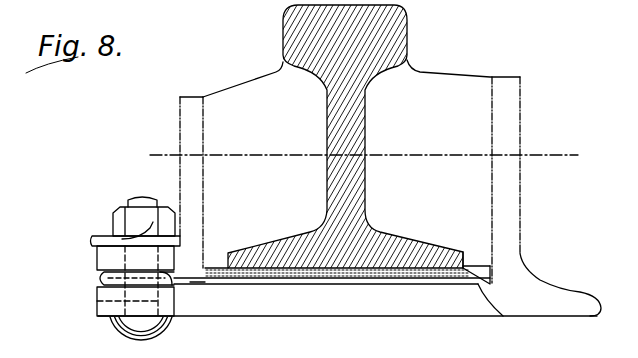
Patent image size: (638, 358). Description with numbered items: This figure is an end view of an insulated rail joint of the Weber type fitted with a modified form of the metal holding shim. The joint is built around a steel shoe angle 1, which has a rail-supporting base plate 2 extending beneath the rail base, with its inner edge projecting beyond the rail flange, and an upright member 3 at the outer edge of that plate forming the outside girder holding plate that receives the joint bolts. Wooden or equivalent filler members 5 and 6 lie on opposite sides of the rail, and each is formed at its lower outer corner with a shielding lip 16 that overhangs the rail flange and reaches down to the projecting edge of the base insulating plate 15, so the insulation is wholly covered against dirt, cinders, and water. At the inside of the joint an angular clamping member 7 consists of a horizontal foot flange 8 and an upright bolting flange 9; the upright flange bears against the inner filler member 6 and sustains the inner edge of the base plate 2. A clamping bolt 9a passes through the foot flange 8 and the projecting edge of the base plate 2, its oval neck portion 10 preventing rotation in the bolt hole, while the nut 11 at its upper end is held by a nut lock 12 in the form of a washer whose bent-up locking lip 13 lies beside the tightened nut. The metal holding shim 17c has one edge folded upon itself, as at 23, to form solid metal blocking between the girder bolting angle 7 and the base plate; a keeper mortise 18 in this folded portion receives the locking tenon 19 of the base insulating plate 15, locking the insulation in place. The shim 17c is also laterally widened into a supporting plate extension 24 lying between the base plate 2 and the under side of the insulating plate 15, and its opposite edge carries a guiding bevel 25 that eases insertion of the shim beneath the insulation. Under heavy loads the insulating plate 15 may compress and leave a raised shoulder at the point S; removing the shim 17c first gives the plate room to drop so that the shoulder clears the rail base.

The steel shoe angle 1 is at (543, 285).
The rail-supporting base plate 2 is at (326, 298).
The upright member 3 is at (512, 103).
The filler member 5 is at (453, 75).
The filler member 6 is at (258, 77).
The angular clamping member 7 is at (185, 136).
The horizontal foot flange 8 is at (103, 255).
The upright bolting flange 9 is at (187, 97).
The clamping bolt 9a is at (141, 196).
The oval neck portion 10 is at (117, 300).
The nut 11 is at (120, 212).
The nut lock 12 is at (95, 241).
The locking lip 13 is at (215, 266).
The insulating plate 15 is at (308, 280).
The shielding lip 16 is at (486, 246).
The metal holding shim 17c is at (98, 278).
The keeper mortise 18 is at (166, 286).
The locking tenon 19 is at (197, 282).
The folded edge portion 23 is at (165, 282).
The supporting plate extension 24 is at (434, 284).
The guiding bevel 25 is at (503, 318).
The raised shoulder S is at (466, 265).